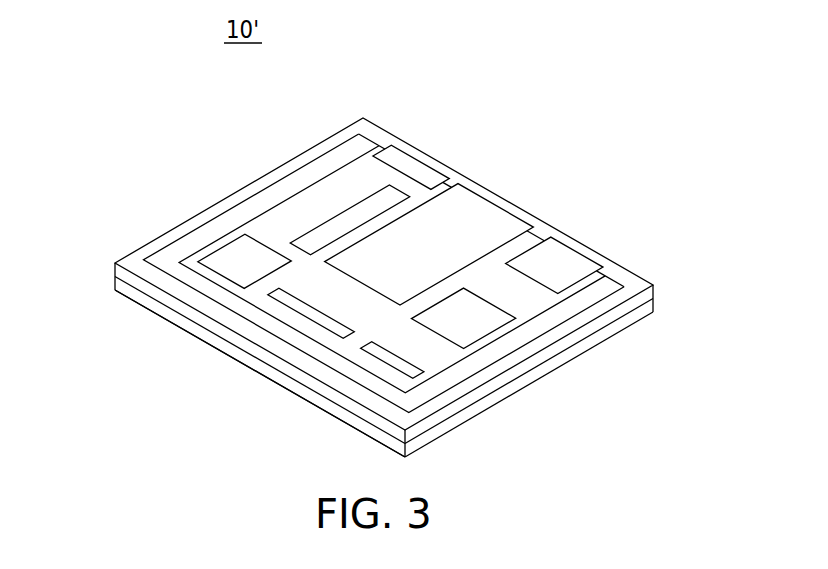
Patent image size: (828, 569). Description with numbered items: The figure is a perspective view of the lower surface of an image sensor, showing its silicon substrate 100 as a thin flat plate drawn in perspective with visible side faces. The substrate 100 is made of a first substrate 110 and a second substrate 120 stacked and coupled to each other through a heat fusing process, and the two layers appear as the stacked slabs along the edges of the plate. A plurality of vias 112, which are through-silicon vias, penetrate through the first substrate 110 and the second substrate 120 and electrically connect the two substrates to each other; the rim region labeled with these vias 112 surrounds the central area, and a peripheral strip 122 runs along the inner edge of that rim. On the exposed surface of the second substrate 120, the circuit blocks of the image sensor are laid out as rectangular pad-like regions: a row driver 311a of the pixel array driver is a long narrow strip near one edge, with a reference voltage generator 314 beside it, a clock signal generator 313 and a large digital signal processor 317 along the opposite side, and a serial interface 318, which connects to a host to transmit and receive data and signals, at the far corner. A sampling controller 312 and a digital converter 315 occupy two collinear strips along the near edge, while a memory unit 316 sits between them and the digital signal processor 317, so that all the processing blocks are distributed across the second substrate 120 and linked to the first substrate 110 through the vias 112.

The substrate 100 is at (157, 398).
The first substrate 110 is at (178, 318).
The second substrate 120 is at (165, 275).
The vias 112 is at (172, 268).
The groove of second layer 122 is at (260, 200).
The row driver 311a is at (363, 208).
The sampling controller 312 is at (328, 322).
The clock signal generator 313 is at (410, 165).
The reference voltage generator 314 is at (223, 257).
The digital converter 315 is at (390, 363).
The memory unit 316 is at (463, 325).
The digital signal processor 317 is at (473, 212).
The serial interface 318 is at (555, 268).